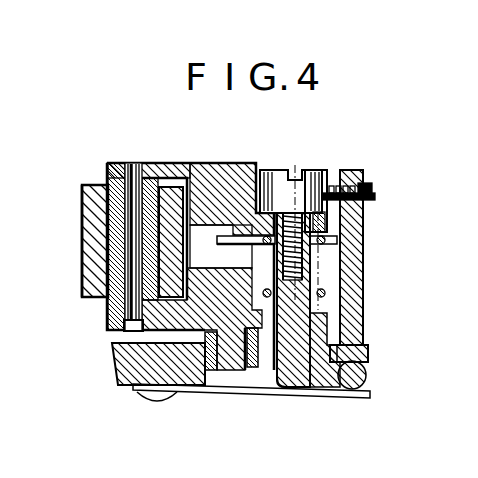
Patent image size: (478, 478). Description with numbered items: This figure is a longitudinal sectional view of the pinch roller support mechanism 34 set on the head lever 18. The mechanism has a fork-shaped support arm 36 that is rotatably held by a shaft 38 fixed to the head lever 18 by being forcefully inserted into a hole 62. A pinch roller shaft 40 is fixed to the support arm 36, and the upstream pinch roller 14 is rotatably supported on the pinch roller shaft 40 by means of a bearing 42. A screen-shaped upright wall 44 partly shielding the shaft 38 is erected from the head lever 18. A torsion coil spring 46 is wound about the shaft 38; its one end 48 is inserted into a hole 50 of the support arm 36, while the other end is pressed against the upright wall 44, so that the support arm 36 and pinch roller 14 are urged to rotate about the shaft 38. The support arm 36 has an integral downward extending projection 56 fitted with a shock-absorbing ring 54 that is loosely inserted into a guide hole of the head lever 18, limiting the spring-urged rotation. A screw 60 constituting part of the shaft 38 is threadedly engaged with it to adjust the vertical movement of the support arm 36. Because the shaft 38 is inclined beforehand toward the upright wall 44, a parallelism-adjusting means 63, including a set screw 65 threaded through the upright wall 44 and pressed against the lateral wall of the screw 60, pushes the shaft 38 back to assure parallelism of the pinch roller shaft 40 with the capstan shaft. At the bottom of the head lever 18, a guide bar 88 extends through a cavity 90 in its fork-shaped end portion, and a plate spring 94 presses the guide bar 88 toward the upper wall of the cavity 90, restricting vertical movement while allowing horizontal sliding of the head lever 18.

The upstream pinch roller 14 is at (92, 258).
The head lever 18 is at (104, 369).
The pinch roller support mechanism 34 is at (193, 165).
The support arm 36 is at (219, 178).
The shaft 38 is at (302, 376).
The pinch roller shaft 40 is at (133, 166).
The bearing 42 is at (84, 203).
The upright wall 44 is at (353, 265).
The torsion coil spring 46 is at (325, 241).
The one end of torsion coil spring 48 is at (231, 246).
The hole of support arm 50 is at (244, 253).
The shock-absorbing ring 54 is at (204, 368).
The projection 56 is at (250, 372).
The screw 60 is at (303, 172).
The hole 62 is at (282, 389).
The parallelism-adjusting means 63 is at (380, 190).
The set screw 65 is at (360, 184).
The guide bar 88 is at (367, 375).
The cavity 90 is at (363, 344).
The plate spring 94 is at (349, 399).